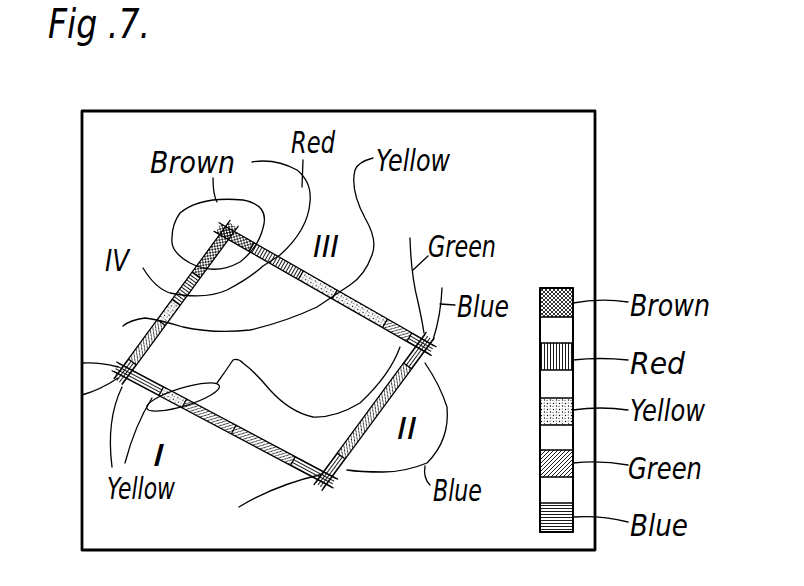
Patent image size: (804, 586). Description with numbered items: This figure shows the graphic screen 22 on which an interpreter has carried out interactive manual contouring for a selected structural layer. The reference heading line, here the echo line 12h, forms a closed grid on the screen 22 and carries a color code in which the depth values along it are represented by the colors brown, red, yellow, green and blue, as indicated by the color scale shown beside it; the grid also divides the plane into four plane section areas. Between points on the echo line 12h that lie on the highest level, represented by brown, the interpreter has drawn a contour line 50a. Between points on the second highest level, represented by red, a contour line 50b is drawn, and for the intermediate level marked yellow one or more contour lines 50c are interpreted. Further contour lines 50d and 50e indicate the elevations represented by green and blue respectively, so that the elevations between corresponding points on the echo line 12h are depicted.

The graphic screen 22 is at (468, 111).
The echo line 12h is at (250, 433).
The contour line 50a is at (173, 240).
The contour line 50b is at (300, 190).
The contour line 50c is at (368, 222).
The contour line 50d is at (313, 412).
The contour line 50e is at (450, 430).